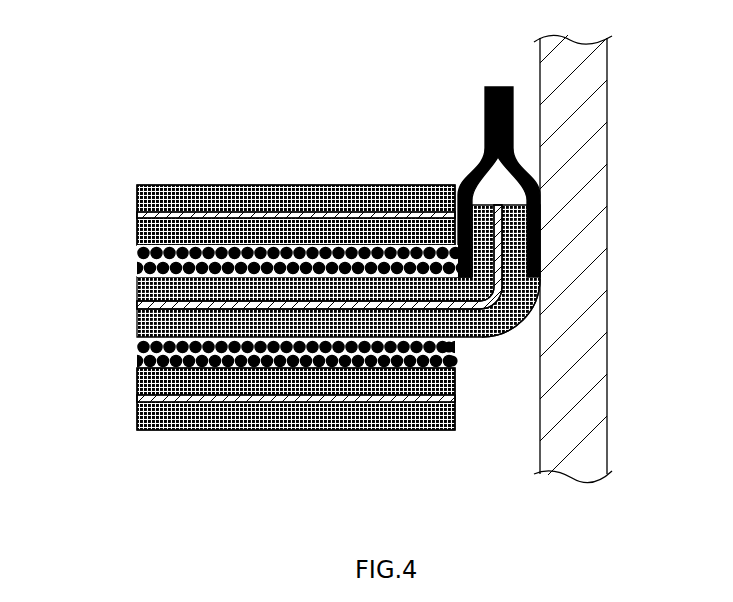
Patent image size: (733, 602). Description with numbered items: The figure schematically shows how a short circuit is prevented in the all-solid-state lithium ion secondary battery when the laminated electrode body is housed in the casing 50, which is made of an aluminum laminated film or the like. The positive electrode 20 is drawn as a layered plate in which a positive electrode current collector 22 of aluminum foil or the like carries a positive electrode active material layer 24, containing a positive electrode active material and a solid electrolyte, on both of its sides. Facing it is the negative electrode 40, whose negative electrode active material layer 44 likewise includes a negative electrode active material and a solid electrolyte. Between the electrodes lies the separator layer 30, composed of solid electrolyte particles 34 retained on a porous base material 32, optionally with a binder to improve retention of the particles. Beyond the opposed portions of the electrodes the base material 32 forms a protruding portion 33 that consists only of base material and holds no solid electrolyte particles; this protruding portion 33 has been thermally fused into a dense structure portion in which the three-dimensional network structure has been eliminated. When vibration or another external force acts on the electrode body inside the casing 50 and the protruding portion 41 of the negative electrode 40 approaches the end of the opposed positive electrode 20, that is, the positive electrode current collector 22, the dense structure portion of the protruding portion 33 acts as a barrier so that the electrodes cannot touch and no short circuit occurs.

The positive electrode 20 is at (234, 181).
The positive electrode current collector 22 is at (137, 215).
The positive electrode active material layer 24 is at (162, 185).
The separator layer 30 is at (133, 250).
The base material 32 is at (457, 343).
The protruding portion 33 is at (473, 178).
The solid electrolyte particles 34 is at (137, 272).
The negative electrode 40 is at (134, 314).
The protruding portion of the negative electrode 41 is at (536, 285).
The negative electrode active material layer 44 is at (137, 304).
The casing 50 is at (608, 104).